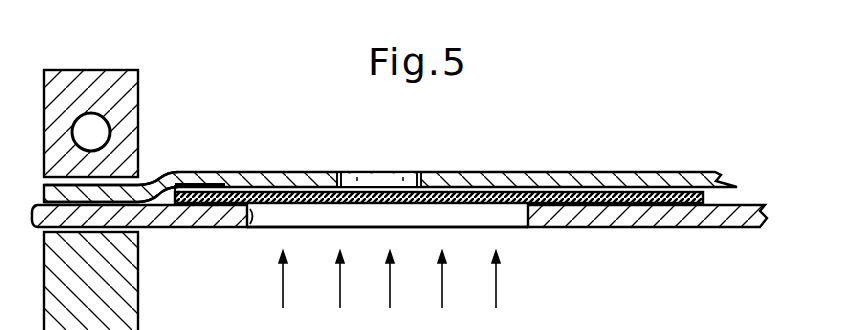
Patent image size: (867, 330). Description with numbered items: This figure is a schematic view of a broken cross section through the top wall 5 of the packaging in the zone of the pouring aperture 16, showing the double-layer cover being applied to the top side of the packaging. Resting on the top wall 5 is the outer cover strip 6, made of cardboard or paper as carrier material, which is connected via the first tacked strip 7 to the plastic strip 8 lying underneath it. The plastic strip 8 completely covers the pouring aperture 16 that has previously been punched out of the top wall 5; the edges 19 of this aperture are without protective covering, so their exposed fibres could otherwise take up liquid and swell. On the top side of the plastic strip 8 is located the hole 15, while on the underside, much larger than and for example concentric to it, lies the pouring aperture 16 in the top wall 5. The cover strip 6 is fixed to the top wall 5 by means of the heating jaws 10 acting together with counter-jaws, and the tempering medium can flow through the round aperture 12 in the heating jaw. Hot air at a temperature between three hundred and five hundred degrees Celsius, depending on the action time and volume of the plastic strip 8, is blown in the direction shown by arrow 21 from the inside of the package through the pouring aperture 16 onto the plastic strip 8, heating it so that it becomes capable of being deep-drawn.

The top wall 5 is at (158, 217).
The outer cover strip 6 is at (542, 177).
The first tacked strip 7 is at (178, 172).
The plastic strip 8 is at (635, 193).
The heating jaws 10 is at (67, 83).
The round aperture 12 is at (96, 113).
The hole 15 is at (342, 173).
The pouring aperture 16 is at (508, 215).
The edges 19 is at (250, 230).
The arrow 21 is at (282, 288).